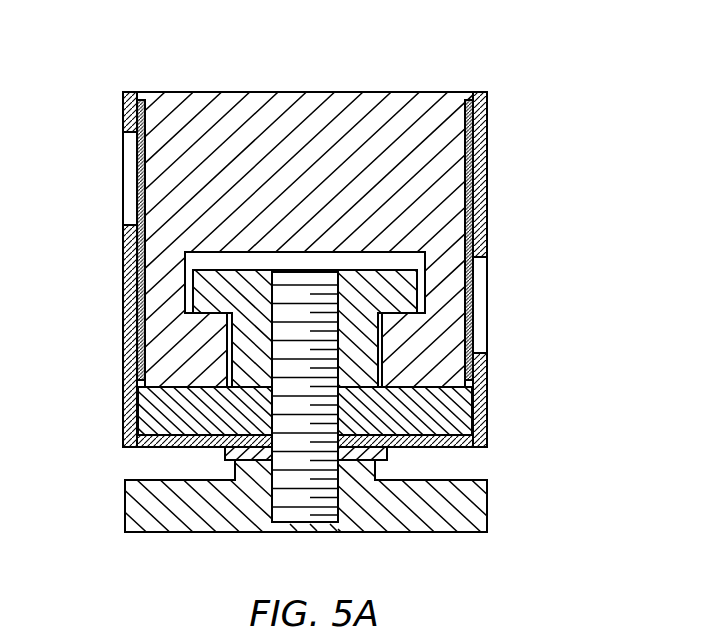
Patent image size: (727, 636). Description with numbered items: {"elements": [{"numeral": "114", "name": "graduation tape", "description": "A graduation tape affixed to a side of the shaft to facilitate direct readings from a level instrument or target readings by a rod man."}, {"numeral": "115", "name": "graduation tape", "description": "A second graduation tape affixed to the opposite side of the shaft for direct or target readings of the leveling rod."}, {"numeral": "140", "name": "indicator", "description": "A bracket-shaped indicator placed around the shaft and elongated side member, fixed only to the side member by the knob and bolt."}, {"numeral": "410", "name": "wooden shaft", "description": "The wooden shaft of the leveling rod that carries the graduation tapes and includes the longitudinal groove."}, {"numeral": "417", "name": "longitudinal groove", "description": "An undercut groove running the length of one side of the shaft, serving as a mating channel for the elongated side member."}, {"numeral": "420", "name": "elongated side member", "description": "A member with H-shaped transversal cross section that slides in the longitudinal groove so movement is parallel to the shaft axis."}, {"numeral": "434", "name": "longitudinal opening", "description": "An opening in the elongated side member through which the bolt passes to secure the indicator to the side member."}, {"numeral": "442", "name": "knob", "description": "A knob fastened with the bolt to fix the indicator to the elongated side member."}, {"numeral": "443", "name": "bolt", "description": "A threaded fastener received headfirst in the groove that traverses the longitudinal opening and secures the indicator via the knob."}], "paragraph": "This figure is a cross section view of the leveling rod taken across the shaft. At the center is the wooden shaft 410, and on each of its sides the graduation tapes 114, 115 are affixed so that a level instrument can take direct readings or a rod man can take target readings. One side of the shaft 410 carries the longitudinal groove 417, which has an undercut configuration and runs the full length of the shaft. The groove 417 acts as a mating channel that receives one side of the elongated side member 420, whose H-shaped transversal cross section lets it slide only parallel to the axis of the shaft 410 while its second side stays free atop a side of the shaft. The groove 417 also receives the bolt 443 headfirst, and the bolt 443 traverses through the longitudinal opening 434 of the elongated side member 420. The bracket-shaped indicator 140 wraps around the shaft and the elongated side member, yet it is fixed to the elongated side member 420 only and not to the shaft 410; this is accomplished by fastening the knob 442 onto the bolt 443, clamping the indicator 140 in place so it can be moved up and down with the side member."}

The first seal/liner layer 114 is at (145, 168).
The second seal/liner layer 115 is at (463, 147).
The outer shell housing 140 is at (490, 115).
The insulating body block 410 is at (300, 115).
The recess in insulating body 417 is at (425, 252).
The base plate 420 is at (140, 392).
The fastener bolt with T-nut 434 is at (282, 423).
The mounting base 442 is at (378, 517).
The clearance channel around nut head 443 is at (267, 262).